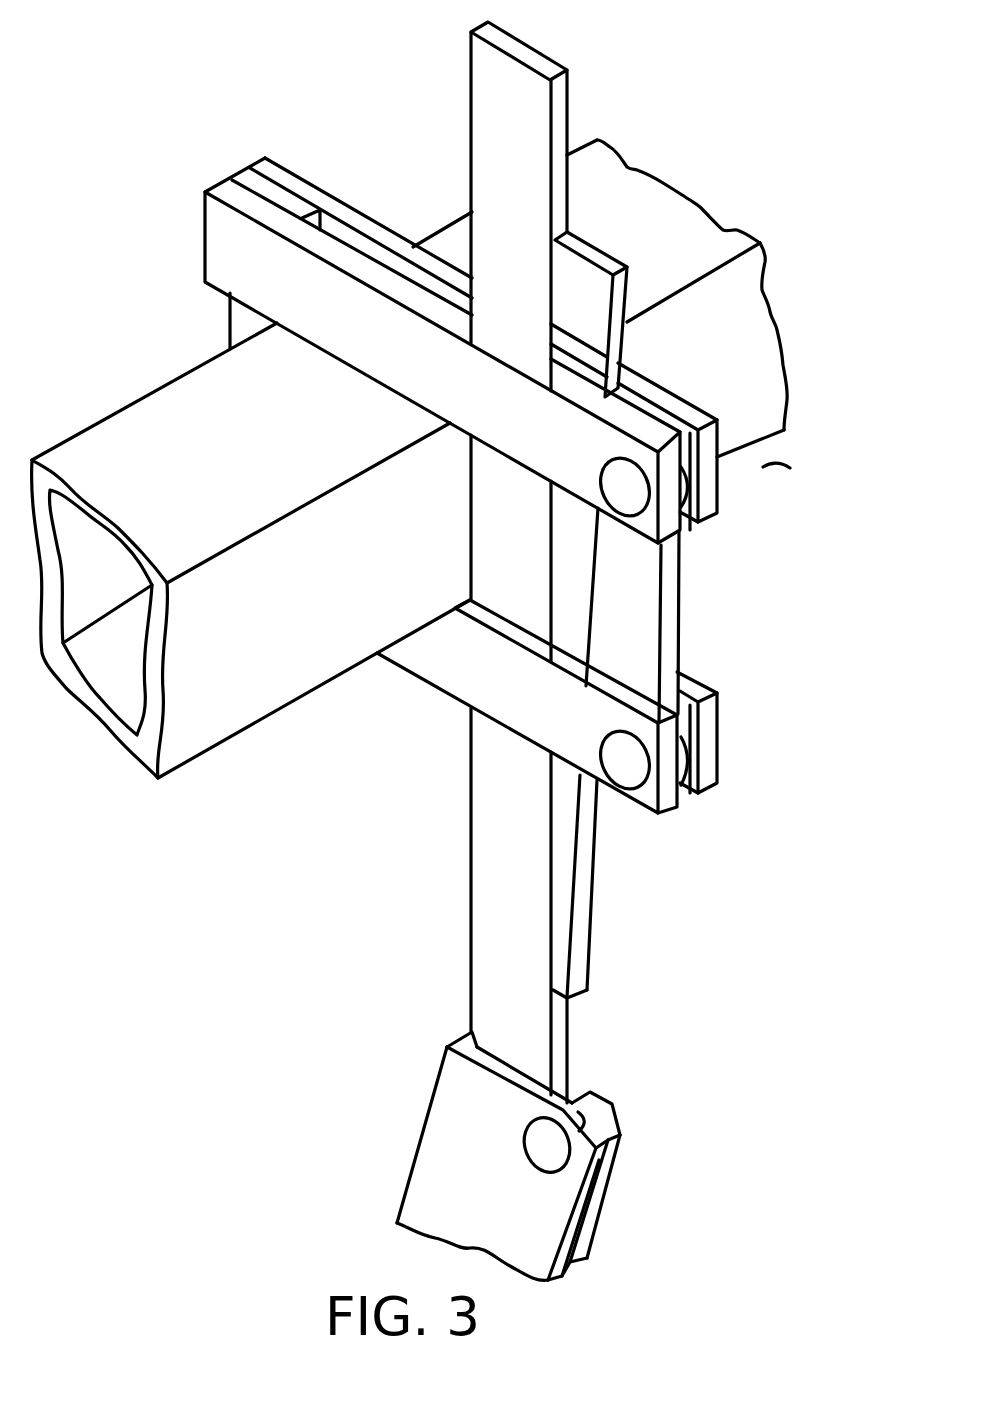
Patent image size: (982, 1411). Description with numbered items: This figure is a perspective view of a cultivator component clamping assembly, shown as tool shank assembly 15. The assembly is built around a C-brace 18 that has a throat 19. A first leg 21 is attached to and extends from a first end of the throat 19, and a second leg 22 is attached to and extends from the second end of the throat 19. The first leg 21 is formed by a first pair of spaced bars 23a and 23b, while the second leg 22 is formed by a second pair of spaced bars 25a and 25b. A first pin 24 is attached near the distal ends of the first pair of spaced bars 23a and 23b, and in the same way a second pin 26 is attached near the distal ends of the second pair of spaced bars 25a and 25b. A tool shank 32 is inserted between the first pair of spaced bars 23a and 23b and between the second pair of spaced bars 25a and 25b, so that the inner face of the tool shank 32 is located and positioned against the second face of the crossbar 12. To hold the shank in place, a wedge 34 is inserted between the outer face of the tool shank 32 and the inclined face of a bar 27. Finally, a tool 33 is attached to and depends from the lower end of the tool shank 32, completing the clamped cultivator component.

The crossbar 12 is at (605, 193).
The tool shank assembly 15 is at (588, 42).
The C-brace 18 is at (436, 124).
The throat 19 is at (250, 317).
The first leg 21 is at (418, 207).
The second leg 22 is at (373, 690).
The first pair of spaced bars 23a is at (335, 338).
The first pair of spaced bars 23b is at (728, 470).
The first pin 24 is at (633, 492).
The second pair of spaced bars 25a is at (665, 800).
The second pair of spaced bars 25b is at (723, 777).
The second pin 26 is at (616, 770).
The bar 27 is at (670, 628).
The tool shank 32 is at (482, 887).
The tool 33 is at (452, 1116).
The wedge 34 is at (597, 286).